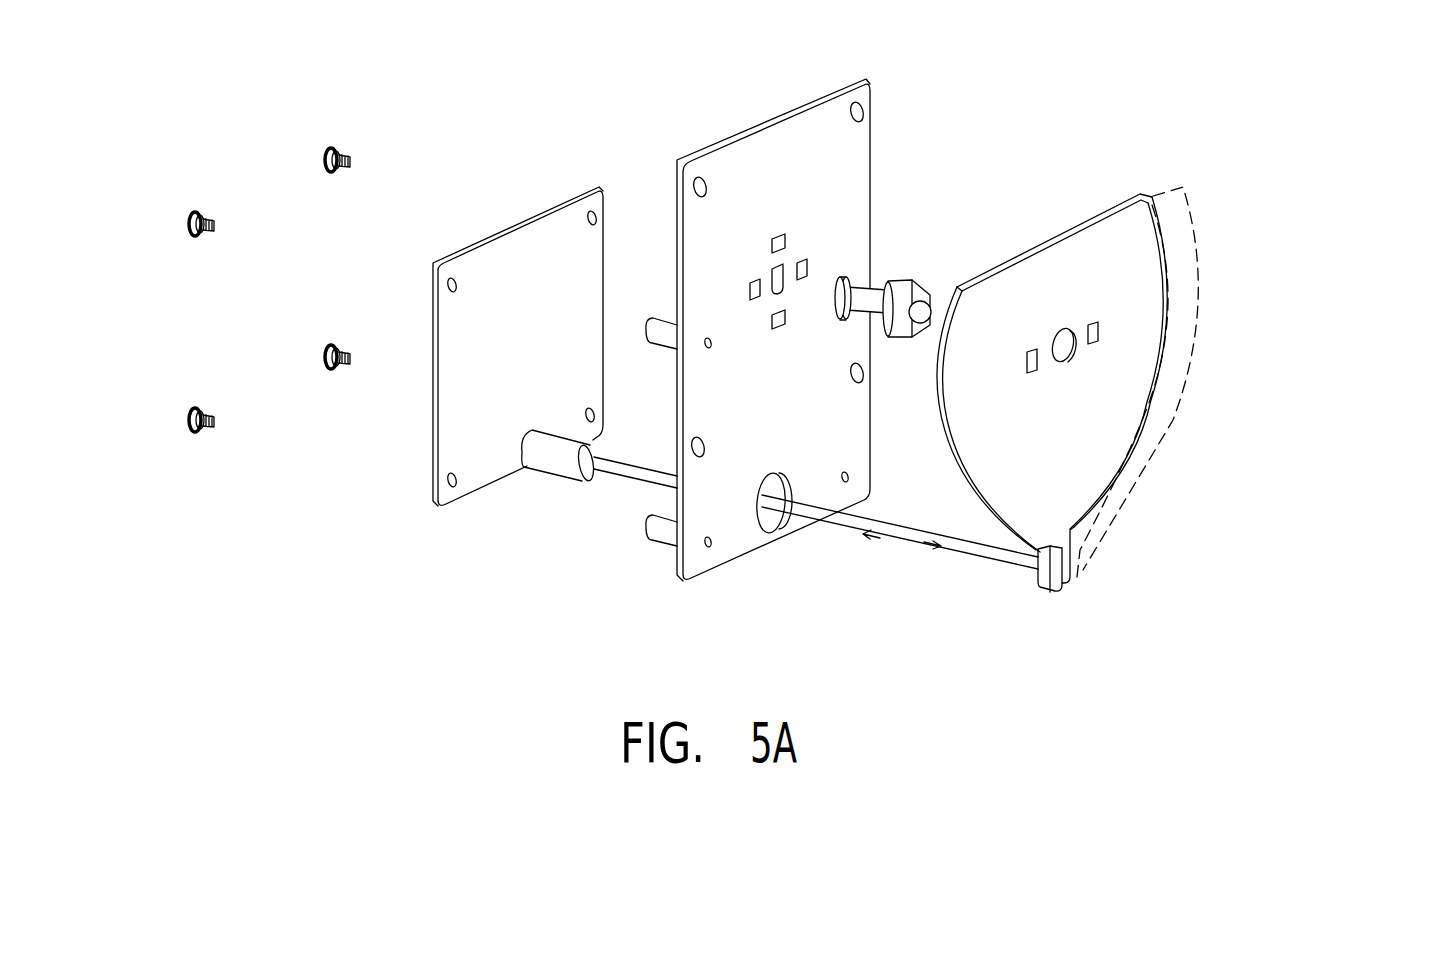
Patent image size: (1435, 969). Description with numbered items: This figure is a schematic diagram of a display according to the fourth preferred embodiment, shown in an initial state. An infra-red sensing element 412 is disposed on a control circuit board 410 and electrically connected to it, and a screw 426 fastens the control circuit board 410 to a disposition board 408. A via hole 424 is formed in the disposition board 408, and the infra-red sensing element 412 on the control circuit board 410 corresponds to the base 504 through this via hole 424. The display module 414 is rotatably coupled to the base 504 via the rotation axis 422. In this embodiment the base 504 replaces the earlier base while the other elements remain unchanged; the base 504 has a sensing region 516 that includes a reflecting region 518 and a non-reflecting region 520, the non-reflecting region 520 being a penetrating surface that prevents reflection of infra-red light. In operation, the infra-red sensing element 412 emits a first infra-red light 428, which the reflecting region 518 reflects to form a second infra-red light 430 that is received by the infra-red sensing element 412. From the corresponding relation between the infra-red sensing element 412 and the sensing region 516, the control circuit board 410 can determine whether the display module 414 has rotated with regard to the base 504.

The disposition board 408 is at (780, 118).
The control circuit board 410 is at (519, 232).
The infra-red sensing element 412 is at (597, 467).
The display module 414 is at (707, 72).
The rotation axis 422 is at (870, 292).
The via hole 424 is at (786, 522).
The screw 426 is at (348, 150).
The first infra-red light 428 is at (905, 528).
The second infra-red light 430 is at (950, 556).
The base 504 is at (1137, 200).
The sensing region 516 is at (1338, 353).
The reflecting region 518 is at (1060, 577).
The non-reflecting region 520 is at (1183, 357).